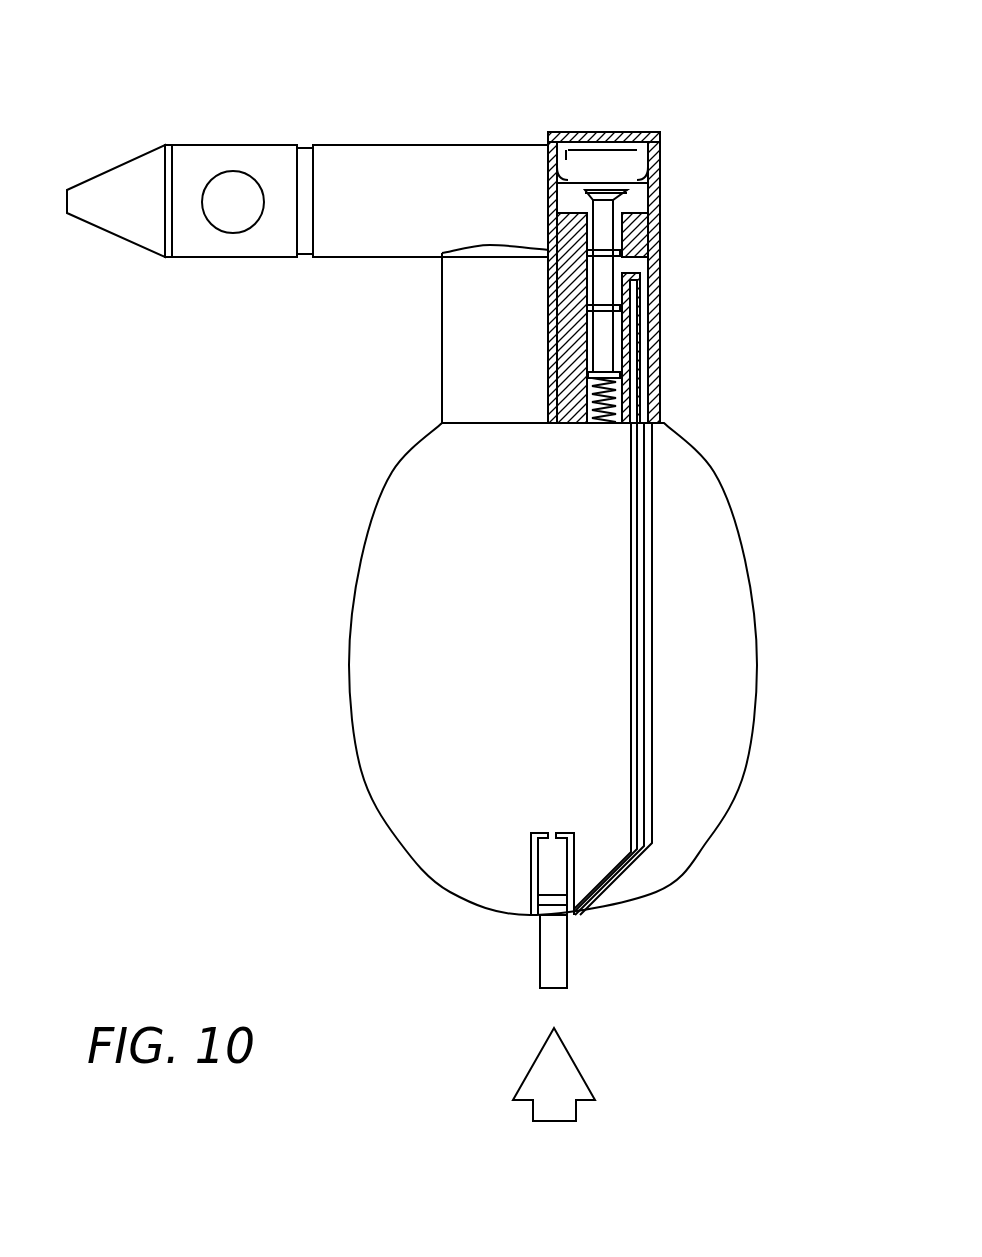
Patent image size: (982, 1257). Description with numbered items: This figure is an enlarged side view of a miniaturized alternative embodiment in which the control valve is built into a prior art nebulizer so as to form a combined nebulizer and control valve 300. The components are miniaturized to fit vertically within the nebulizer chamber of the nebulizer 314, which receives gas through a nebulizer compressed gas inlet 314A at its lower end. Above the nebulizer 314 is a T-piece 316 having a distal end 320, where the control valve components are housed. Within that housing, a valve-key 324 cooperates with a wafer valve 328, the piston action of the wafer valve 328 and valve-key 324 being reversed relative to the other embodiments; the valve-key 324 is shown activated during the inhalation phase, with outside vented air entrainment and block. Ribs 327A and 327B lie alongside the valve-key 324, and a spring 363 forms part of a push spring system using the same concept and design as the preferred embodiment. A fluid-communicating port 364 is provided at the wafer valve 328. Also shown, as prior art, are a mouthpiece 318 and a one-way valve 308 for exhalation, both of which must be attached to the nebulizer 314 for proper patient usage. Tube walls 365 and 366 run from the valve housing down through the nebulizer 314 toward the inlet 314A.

The combined nebulizer and control valve 300 is at (660, 75).
The one-way valve 308 is at (233, 190).
The nebulizer 314 is at (353, 580).
The nebulizer compressed gas inlet 314A is at (540, 952).
The T-piece 316 is at (380, 145).
The mouthpiece 318 is at (118, 165).
The distal end 320 is at (533, 157).
The valve-key 324 is at (605, 210).
The rib 327A is at (620, 250).
The rib 327B is at (622, 303).
The wafer valve 328 is at (660, 151).
The spring 363 is at (623, 413).
The fluid-communicating port 364 is at (568, 157).
The inner tube 365 is at (632, 758).
The outer tube 366 is at (648, 775).